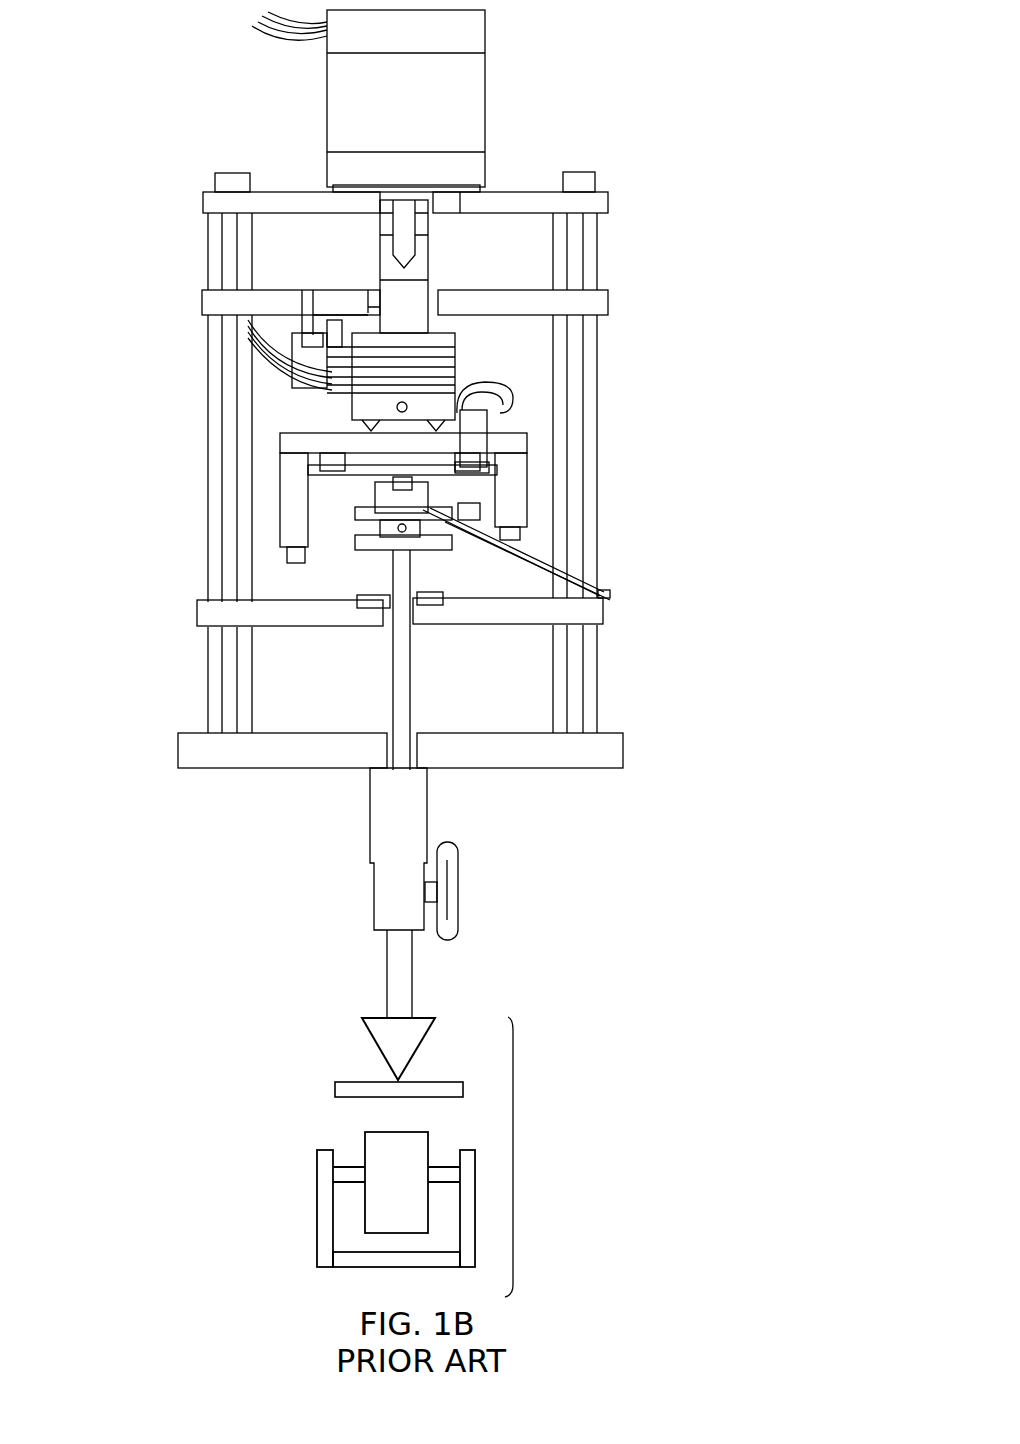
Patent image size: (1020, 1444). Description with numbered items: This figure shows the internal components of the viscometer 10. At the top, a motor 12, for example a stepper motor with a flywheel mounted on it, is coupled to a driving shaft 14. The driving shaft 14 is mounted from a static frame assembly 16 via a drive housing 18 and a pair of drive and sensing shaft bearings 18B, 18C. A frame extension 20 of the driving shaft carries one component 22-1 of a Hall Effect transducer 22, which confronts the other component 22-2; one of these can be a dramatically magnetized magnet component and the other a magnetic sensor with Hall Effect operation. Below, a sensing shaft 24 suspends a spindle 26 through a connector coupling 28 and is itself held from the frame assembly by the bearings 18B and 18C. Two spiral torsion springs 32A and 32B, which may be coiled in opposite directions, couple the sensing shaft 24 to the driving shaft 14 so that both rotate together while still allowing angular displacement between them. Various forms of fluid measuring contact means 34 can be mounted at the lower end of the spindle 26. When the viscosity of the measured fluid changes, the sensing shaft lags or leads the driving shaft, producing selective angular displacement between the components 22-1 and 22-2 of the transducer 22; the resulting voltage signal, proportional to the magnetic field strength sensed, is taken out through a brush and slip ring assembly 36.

The viscometer 10 is at (668, 172).
The motor 12 is at (487, 30).
The driving shaft 14 is at (430, 253).
The static frame assembly 16 is at (203, 203).
The drive housing 18 is at (440, 298).
The drive and sensing shaft bearing 18B is at (422, 613).
The drive and sensing shaft bearing 18C is at (417, 747).
The frame extension 20 is at (285, 460).
The Hall Effect transducer 22 is at (373, 483).
The transducer component 22-1 is at (362, 495).
The transducer component 22-2 is at (467, 477).
The sensing shaft 24 is at (395, 570).
The spindle 26 is at (387, 977).
The connector coupling 28 is at (370, 812).
The spiral torsion spring 32A is at (527, 553).
The spiral torsion spring 32B is at (567, 568).
The fluid measuring contact means 34 is at (513, 1150).
The brush and slip ring assembly 36 is at (293, 375).